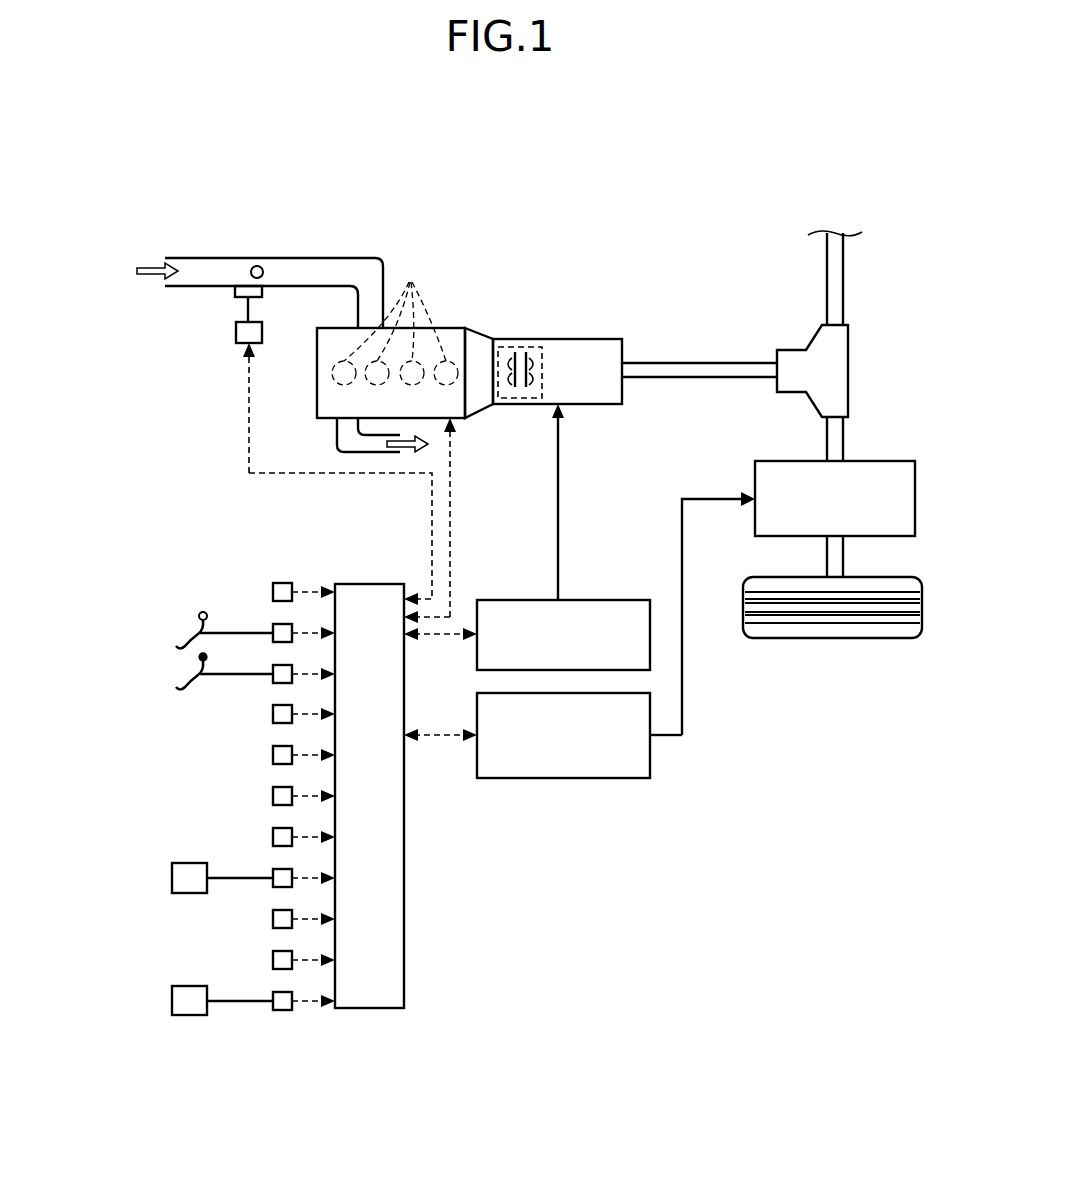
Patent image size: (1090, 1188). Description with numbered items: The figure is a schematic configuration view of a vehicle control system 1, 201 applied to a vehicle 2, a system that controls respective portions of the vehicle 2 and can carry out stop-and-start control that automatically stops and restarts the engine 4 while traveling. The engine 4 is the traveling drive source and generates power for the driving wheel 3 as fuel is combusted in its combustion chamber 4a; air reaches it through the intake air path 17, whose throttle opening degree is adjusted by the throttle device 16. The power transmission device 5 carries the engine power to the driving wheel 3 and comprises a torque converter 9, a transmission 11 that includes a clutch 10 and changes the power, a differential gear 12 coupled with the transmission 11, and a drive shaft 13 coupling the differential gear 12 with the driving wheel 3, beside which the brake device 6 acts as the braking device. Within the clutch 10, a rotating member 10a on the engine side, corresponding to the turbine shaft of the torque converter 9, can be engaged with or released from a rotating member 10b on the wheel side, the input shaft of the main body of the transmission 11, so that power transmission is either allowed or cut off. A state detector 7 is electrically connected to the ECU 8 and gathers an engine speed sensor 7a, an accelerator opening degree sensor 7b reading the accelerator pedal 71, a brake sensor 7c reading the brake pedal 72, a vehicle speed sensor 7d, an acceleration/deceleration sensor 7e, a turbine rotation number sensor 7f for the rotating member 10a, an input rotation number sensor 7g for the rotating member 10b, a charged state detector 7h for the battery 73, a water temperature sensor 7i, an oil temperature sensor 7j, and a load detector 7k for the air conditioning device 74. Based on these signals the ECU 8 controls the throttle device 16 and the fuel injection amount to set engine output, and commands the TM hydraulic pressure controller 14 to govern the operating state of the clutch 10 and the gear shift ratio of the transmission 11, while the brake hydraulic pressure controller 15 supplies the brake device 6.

The vehicle control system 1 is at (140, 370).
The vehicle control system 201 is at (150, 410).
The vehicle 2 is at (716, 176).
The driving wheel 3 is at (870, 640).
The engine 4 is at (456, 328).
The combustion chamber 4a is at (395, 318).
The power transmission device 5 is at (672, 303).
The brake device 6 is at (884, 461).
The state detector 7 is at (288, 566).
The engine speed sensor 7a is at (273, 592).
The accelerator opening degree sensor 7b is at (273, 629).
The brake sensor 7c is at (273, 670).
The vehicle speed sensor 7d is at (273, 714).
The acceleration/deceleration sensor 7e is at (273, 755).
The turbine rotation number sensor 7f is at (273, 796).
The input rotation number sensor 7g is at (273, 837).
The charged state detector 7h is at (273, 874).
The water temperature sensor 7i is at (273, 919).
The oil temperature sensor 7j is at (273, 958).
The load detector 7k is at (273, 997).
The ECU 8 is at (404, 888).
The torque converter 9 is at (480, 340).
The clutch 10 is at (544, 357).
The rotating member 10a is at (513, 389).
The rotating member 10b is at (527, 389).
The transmission 11 is at (592, 339).
The differential gear 12 is at (795, 360).
The drive shaft 13 is at (833, 437).
The TM hydraulic pressure controller 14 is at (610, 600).
The brake hydraulic pressure controller 15 is at (558, 778).
The throttle device 16 is at (263, 333).
The intake air path 17 is at (350, 258).
The accelerator pedal 71 is at (199, 618).
The brake pedal 72 is at (199, 659).
The battery 73 is at (172, 877).
The air conditioning device 74 is at (172, 999).